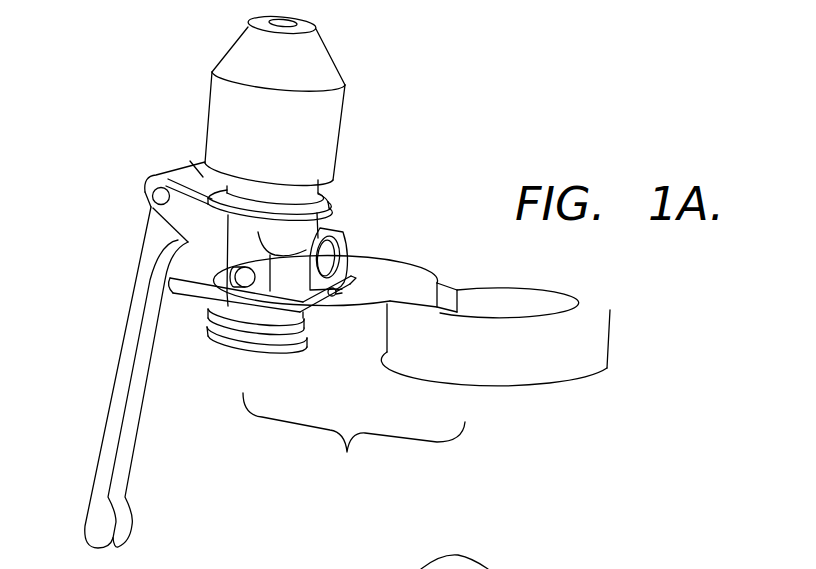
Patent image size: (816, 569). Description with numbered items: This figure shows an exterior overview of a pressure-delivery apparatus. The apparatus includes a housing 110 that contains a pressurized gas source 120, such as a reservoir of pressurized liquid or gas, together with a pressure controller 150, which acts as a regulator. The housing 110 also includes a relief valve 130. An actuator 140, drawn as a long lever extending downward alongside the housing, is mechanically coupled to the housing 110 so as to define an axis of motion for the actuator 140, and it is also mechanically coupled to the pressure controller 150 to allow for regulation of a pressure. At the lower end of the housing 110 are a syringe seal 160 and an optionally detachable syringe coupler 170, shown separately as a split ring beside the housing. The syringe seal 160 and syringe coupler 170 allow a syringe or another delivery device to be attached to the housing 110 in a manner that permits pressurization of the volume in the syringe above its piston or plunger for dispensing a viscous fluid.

The housing 110 is at (207, 108).
The pressurized gas source 120 is at (320, 115).
The relief valve 130 is at (230, 273).
The actuator 140 is at (118, 327).
The pressure controller 150 is at (318, 242).
The syringe seal 160 is at (265, 354).
The syringe coupler 170 is at (597, 348).